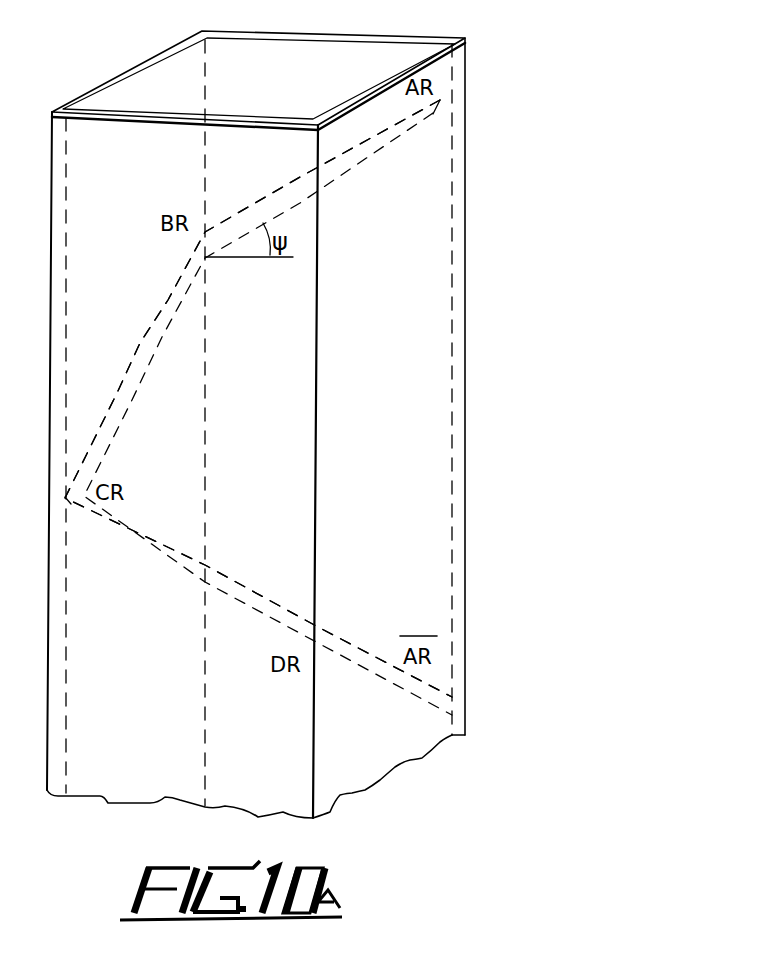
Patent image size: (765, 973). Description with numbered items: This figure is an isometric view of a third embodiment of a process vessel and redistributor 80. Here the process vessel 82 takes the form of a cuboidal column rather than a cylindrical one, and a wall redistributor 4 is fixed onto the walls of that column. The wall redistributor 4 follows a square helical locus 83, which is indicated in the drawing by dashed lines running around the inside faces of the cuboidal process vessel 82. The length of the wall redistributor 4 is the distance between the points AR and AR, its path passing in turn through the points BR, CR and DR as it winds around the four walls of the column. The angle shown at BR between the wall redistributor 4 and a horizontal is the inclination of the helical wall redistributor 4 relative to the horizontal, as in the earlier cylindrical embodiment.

The process vessel and redistributor 80 is at (484, 446).
The process vessel 82 is at (357, 58).
The square helical locus 83 is at (380, 138).
The wall redistributor 4 is at (264, 210).